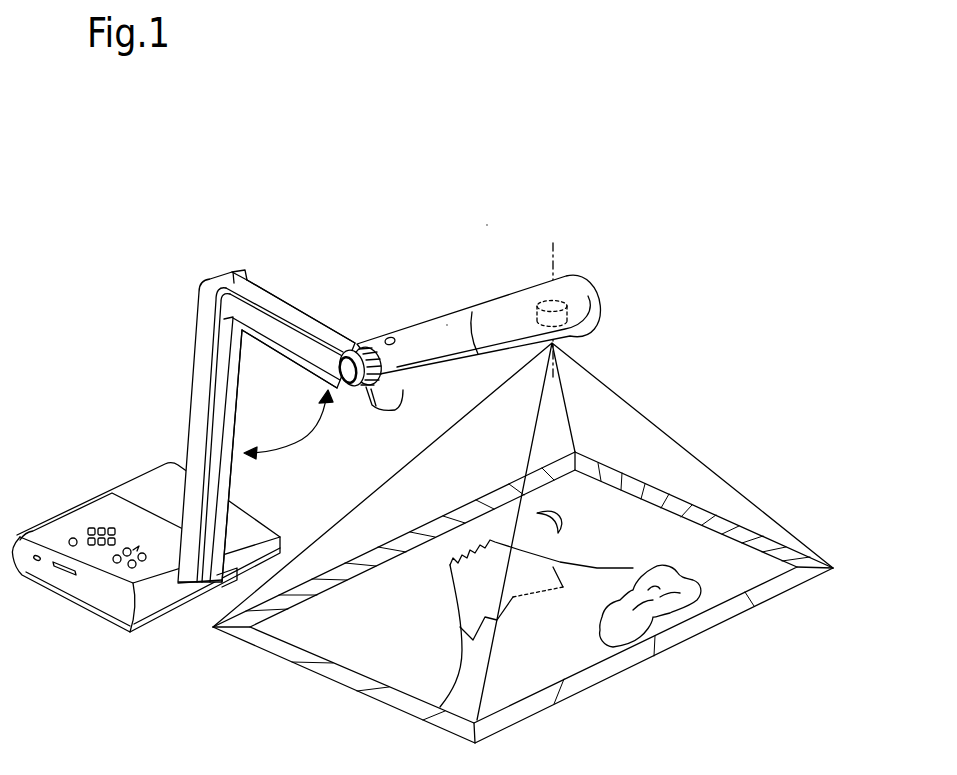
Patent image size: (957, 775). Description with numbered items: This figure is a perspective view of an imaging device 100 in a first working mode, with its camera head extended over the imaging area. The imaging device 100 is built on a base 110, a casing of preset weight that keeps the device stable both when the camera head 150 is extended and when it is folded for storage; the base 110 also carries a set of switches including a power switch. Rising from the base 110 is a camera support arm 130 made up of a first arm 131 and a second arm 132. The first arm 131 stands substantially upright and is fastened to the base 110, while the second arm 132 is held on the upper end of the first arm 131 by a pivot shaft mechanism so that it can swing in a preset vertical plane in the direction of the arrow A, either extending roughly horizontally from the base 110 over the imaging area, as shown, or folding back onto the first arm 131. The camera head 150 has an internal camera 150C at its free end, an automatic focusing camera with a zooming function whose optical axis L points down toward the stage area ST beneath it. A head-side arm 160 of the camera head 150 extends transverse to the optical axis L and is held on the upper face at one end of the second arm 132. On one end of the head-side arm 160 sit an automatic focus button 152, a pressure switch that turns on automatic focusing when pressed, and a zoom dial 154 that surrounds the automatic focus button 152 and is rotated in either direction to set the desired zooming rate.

The imaging device 100 is at (486, 224).
The base 110 is at (147, 493).
The camera support arm 130 is at (199, 401).
The first arm 131 is at (195, 332).
The second arm 132 is at (263, 283).
The camera head 150 is at (528, 303).
The internal camera 150C is at (560, 303).
The automatic focus button 152 is at (343, 349).
The zoom dial 154 is at (366, 410).
The head-side arm 160 is at (447, 322).
The optical axis L is at (553, 258).
The stage ST is at (633, 525).
The arrow A is at (303, 441).